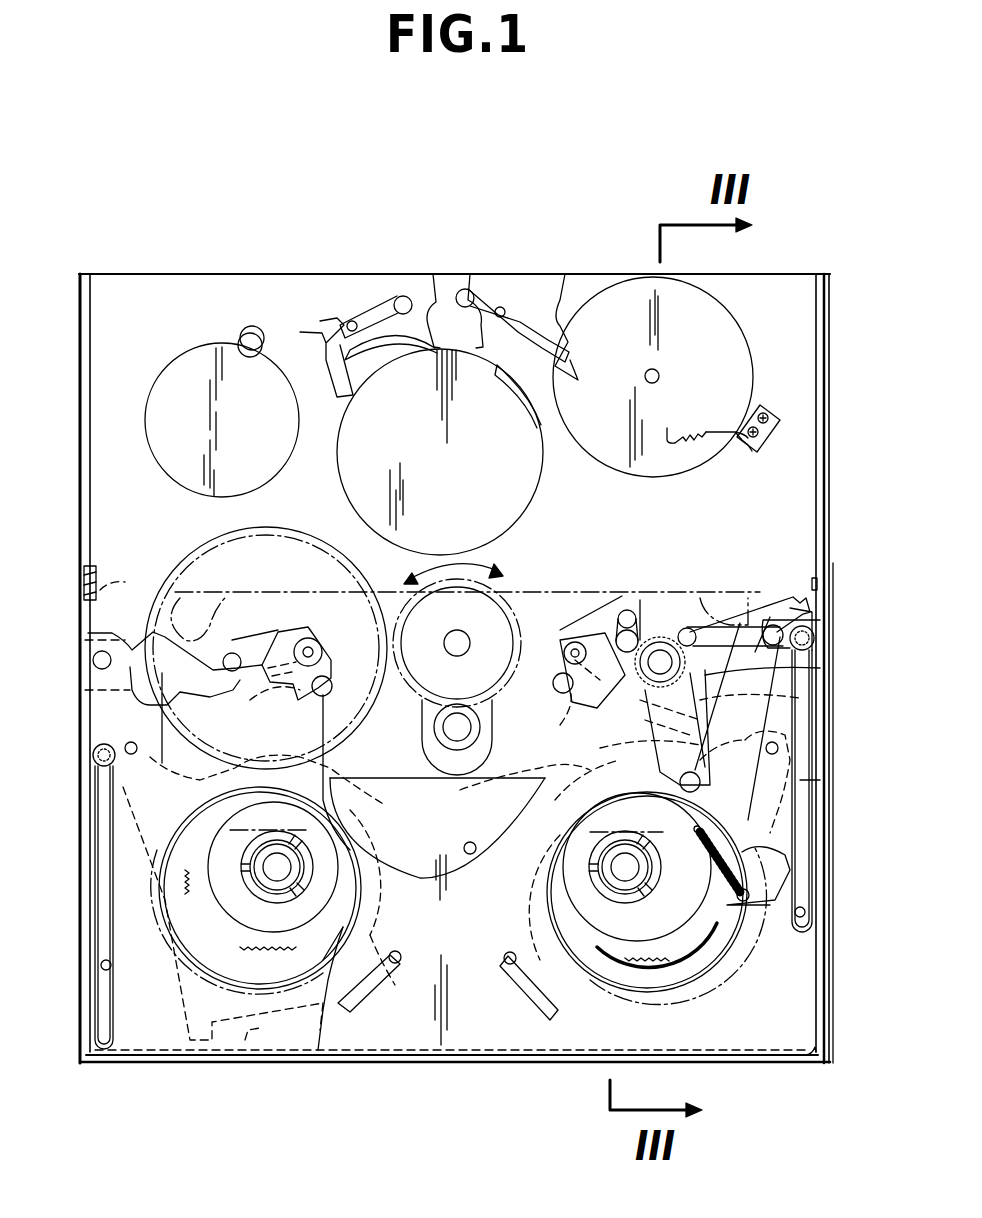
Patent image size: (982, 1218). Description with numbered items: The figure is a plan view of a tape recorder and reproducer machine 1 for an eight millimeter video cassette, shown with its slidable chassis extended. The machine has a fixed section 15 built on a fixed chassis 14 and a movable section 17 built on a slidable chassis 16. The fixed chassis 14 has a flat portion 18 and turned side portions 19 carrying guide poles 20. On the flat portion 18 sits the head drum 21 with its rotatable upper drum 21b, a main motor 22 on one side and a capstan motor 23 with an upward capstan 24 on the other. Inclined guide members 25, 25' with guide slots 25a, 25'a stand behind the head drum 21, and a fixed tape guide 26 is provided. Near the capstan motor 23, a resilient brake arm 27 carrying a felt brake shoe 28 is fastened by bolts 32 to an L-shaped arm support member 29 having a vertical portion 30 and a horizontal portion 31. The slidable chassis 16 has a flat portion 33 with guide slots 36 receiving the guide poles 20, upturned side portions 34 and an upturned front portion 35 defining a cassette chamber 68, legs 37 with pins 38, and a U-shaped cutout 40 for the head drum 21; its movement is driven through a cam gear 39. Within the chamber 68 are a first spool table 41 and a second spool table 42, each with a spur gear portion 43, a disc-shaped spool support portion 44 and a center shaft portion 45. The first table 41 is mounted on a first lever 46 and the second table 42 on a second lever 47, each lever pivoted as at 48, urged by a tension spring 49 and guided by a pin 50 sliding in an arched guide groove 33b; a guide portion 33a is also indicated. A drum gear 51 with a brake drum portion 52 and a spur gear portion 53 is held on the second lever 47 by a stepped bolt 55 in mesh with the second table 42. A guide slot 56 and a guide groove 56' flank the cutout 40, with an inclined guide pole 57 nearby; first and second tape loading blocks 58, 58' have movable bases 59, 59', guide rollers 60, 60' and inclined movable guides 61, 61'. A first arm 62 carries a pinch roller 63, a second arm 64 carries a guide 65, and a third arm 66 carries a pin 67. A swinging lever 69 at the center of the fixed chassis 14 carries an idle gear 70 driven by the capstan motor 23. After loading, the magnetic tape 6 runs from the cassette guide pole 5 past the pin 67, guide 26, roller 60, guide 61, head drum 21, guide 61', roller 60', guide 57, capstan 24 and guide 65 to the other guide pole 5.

The tape recorder and reproducer machine 1 is at (380, 248).
The guide pole 5 is at (185, 598).
The magnetic tape 6 is at (565, 575).
The fixed chassis 14 is at (200, 274).
The fixed section 15 is at (452, 265).
The slidable chassis 16 is at (405, 1064).
The movable section 17 is at (333, 1064).
The flat portion 18 is at (145, 274).
The turned side portions 19 is at (89, 328).
The guide poles 20 is at (814, 638).
The head drum 21 is at (340, 493).
The upper drum 21b is at (540, 485).
The main motor 22 is at (150, 388).
The capstan motor 23 is at (752, 353).
The capstan 24 is at (660, 370).
The guide member 25 is at (320, 302).
The guide slot 25a is at (345, 318).
The guide member 25' is at (535, 295).
The guide slot 25'a is at (522, 264).
The fixed tape guide 26 is at (250, 357).
The brake arm 27 is at (710, 428).
The brake shoe 28 is at (676, 421).
The arm support member 29 is at (762, 408).
The vertical portion 30 is at (770, 450).
The horizontal portion 31 is at (781, 423).
The bolts 32 is at (733, 440).
The flat portion 33 is at (455, 1056).
The guide portion 33a is at (318, 1010).
The arched guide groove 33b is at (355, 1010).
The upturned side portions 34 is at (79, 712).
The upturned front portion 35 is at (745, 1064).
The guide slots 36 is at (108, 970).
The leg 37 is at (95, 568).
The pin 38 is at (96, 590).
The cam gear 39 is at (200, 553).
The U-shaped cutout 40 is at (472, 855).
The first spool table 41 is at (254, 897).
The second spool table 42 is at (730, 975).
The spur gear portion 43 is at (193, 900).
The spool support portion 44 is at (340, 866).
The center shaft portion 45 is at (350, 810).
The first lever 46 is at (395, 938).
The second lever 47 is at (540, 770).
The pivot 48 is at (125, 745).
The tension spring 49 is at (845, 867).
The pin 50 is at (400, 958).
The drum gear 51 is at (770, 690).
The brake drum portion 52 is at (740, 700).
The spur gear portion 53 is at (728, 715).
The stepped bolt 55 is at (620, 748).
The guide slot 56 is at (270, 712).
The guide groove 56' is at (534, 721).
The inclined guide pole 57 is at (627, 612).
The first tape loading block 58 is at (296, 626).
The second tape loading block 58' is at (592, 629).
The movable base 59 is at (318, 872).
The movable base 59' is at (611, 728).
The guide roller 60 is at (326, 630).
The guide roller 60' is at (553, 629).
The inclined movable guide 61 is at (341, 673).
The inclined movable guide 61' is at (534, 697).
The first arm 62 is at (700, 700).
The pinch roller 63 is at (655, 648).
The second arm 64 is at (690, 628).
The guide 65 is at (682, 628).
The third arm 66 is at (184, 670).
The pin 67 is at (232, 656).
The cassette chamber 68 is at (444, 930).
The swinging lever 69 is at (427, 718).
The idle gear 70 is at (498, 585).